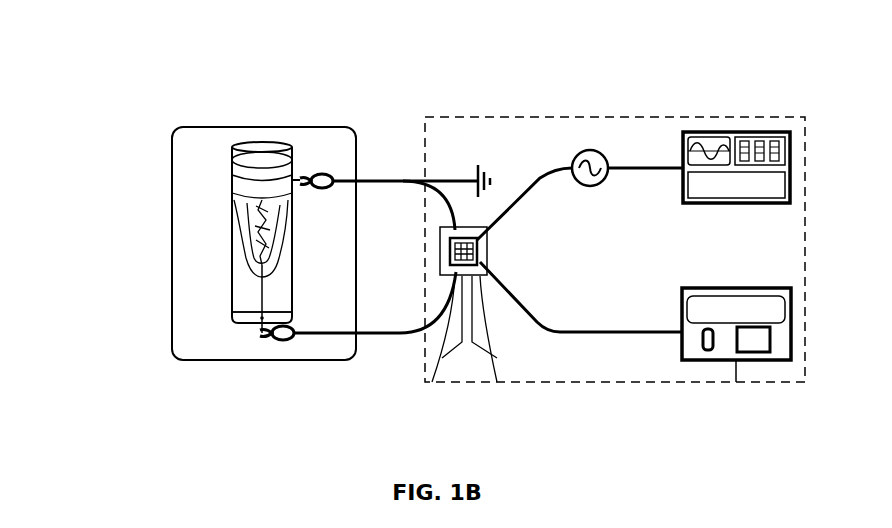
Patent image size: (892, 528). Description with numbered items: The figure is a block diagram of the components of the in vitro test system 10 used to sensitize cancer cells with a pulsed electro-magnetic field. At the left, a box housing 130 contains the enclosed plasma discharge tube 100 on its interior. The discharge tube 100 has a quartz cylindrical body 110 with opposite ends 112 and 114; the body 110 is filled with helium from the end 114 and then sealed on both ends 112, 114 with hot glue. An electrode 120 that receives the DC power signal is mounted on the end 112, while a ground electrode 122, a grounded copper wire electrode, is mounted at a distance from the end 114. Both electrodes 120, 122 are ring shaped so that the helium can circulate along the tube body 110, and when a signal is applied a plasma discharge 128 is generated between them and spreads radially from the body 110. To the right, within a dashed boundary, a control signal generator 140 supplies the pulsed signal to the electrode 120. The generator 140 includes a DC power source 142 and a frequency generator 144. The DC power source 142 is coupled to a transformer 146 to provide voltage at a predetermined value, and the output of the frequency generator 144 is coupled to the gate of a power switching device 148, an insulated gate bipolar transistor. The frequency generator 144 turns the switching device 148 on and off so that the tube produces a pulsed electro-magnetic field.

The in vitro test system 10 is at (155, 97).
The plasma discharge tube 100 is at (227, 213).
The quartz cylindrical body 110 is at (228, 288).
The end 112 is at (237, 322).
The end 114 is at (286, 146).
The electrode 120 is at (280, 340).
The ground electrode 122 is at (302, 178).
The plasma discharge 128 is at (232, 247).
The box housing 130 is at (170, 138).
The control signal generator 140 is at (550, 383).
The DC power source 142 is at (708, 360).
The frequency generator 144 is at (737, 132).
The transformer 146 is at (497, 382).
The power switching device 148 is at (432, 382).